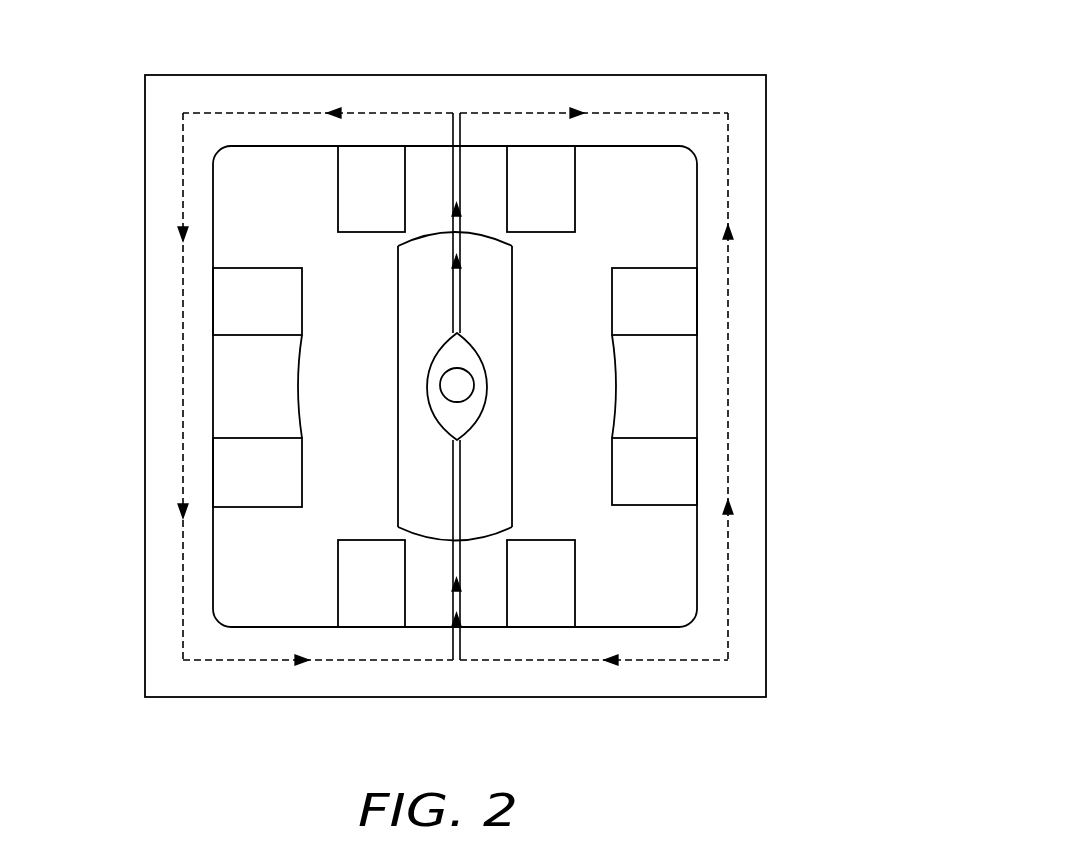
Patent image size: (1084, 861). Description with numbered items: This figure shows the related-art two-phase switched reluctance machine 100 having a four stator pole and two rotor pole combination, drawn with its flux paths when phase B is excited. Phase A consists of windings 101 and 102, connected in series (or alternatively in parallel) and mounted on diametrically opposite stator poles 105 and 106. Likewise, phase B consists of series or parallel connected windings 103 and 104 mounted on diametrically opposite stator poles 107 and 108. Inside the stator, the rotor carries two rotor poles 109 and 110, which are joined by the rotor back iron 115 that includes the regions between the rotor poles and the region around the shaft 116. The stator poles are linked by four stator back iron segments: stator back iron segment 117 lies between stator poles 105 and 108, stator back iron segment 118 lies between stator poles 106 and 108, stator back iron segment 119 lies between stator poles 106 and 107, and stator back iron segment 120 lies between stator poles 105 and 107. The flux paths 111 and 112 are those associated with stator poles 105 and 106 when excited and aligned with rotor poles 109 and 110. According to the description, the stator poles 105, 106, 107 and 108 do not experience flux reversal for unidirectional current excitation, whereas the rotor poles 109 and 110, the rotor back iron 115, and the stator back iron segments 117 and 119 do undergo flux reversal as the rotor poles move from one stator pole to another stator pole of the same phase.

The system 100 is at (838, 178).
The winding 101 is at (386, 208).
The winding 102 is at (394, 605).
The winding 103 is at (274, 318).
The winding 104 is at (683, 323).
The stator pole 105 is at (497, 181).
The stator pole 106 is at (446, 624).
The stator pole 107 is at (264, 410).
The stator pole 108 is at (681, 406).
The rotor pole 109 is at (483, 262).
The rotor pole 110 is at (483, 520).
The flux path 111 is at (180, 395).
The flux path 112 is at (728, 387).
The rotor back iron 115 is at (490, 340).
The shaft 116 is at (440, 385).
The stator back iron segment 117 is at (624, 95).
The stator back iron segment 118 is at (652, 680).
The stator back iron segment 119 is at (295, 682).
The stator back iron segment 120 is at (284, 92).